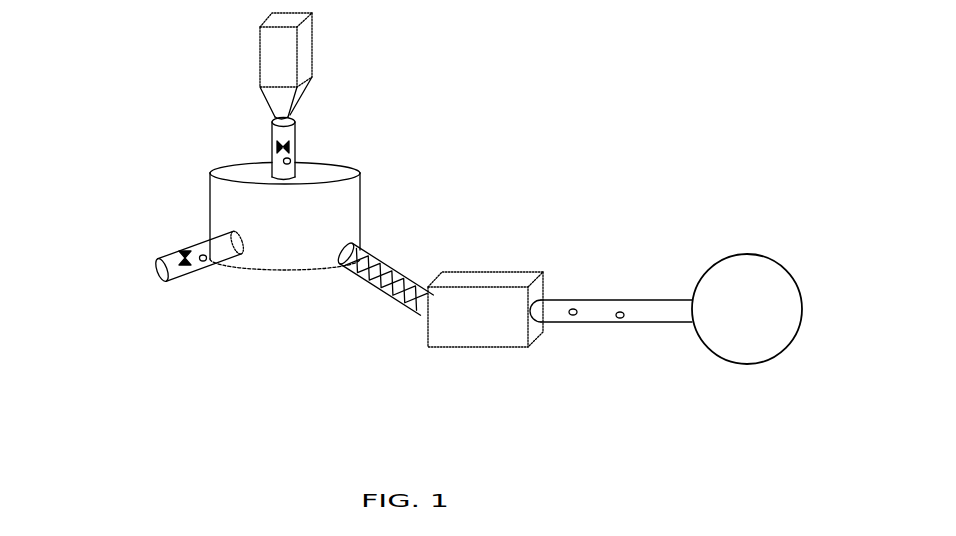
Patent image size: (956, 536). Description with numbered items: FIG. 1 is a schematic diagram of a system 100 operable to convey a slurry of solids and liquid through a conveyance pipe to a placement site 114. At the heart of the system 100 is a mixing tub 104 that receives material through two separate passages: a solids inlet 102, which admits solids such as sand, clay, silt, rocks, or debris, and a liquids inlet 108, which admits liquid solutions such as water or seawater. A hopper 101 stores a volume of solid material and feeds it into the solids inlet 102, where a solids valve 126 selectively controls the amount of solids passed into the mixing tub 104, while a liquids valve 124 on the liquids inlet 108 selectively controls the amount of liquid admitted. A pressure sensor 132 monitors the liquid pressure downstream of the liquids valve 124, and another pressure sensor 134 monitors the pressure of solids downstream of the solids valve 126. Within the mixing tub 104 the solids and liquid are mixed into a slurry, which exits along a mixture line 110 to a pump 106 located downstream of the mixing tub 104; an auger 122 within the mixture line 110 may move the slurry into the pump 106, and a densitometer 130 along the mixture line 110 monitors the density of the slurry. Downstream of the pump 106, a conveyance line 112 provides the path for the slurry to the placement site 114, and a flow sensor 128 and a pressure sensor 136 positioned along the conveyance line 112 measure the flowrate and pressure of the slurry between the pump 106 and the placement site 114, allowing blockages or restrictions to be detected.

The system 100 is at (92, 89).
The hopper 101 is at (273, 82).
The solids inlet 102 is at (272, 120).
The mixing tub 104 is at (213, 188).
The pump 106 is at (483, 278).
The liquids inlet 108 is at (162, 265).
The mixture line 110 is at (397, 268).
The conveyance line 112 is at (608, 298).
The placement site 114 is at (778, 262).
The auger 122 is at (382, 292).
The liquids valve 124 is at (180, 250).
The solids valve 126 is at (278, 147).
The flow sensor 128 is at (577, 315).
The densitometer 130 is at (355, 242).
The pressure sensor 132 is at (208, 262).
The pressure sensor 134 is at (290, 158).
The pressure sensor 136 is at (623, 318).